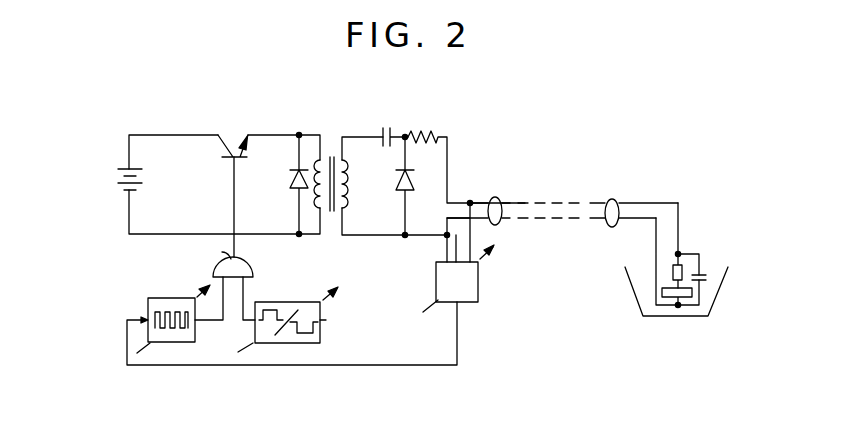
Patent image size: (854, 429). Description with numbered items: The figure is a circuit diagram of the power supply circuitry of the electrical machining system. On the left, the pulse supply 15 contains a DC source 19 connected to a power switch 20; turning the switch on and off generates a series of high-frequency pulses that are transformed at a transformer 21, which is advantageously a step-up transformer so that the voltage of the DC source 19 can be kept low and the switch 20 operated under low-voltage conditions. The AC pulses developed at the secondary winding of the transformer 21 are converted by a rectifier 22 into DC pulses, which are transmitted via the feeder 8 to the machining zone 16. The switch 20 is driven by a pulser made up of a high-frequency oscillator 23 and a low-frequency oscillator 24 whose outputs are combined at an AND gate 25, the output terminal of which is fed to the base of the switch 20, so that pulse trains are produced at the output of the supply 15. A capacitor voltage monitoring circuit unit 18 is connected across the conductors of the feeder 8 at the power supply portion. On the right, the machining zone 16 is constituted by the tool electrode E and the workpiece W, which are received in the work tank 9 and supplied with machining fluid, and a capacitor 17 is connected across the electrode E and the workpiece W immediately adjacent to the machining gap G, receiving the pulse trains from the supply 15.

The feeder 8 is at (574, 201).
The work tank 9 is at (626, 284).
The pulse supply 15 is at (222, 301).
The machining zone 16 is at (685, 252).
The capacitor 17 is at (705, 276).
The capacitor voltage monitoring circuit unit 18 is at (436, 270).
The DC source 19 is at (146, 180).
The power switch 20 is at (237, 135).
The transformer 21 is at (332, 147).
The rectifier 22 is at (398, 178).
The high-frequency oscillator 23 is at (163, 298).
The low-frequency oscillator 24 is at (326, 320).
The AND gate 25 is at (256, 270).
The tool electrode E is at (672, 272).
The workpiece W is at (667, 300).
The machining gap G is at (694, 286).